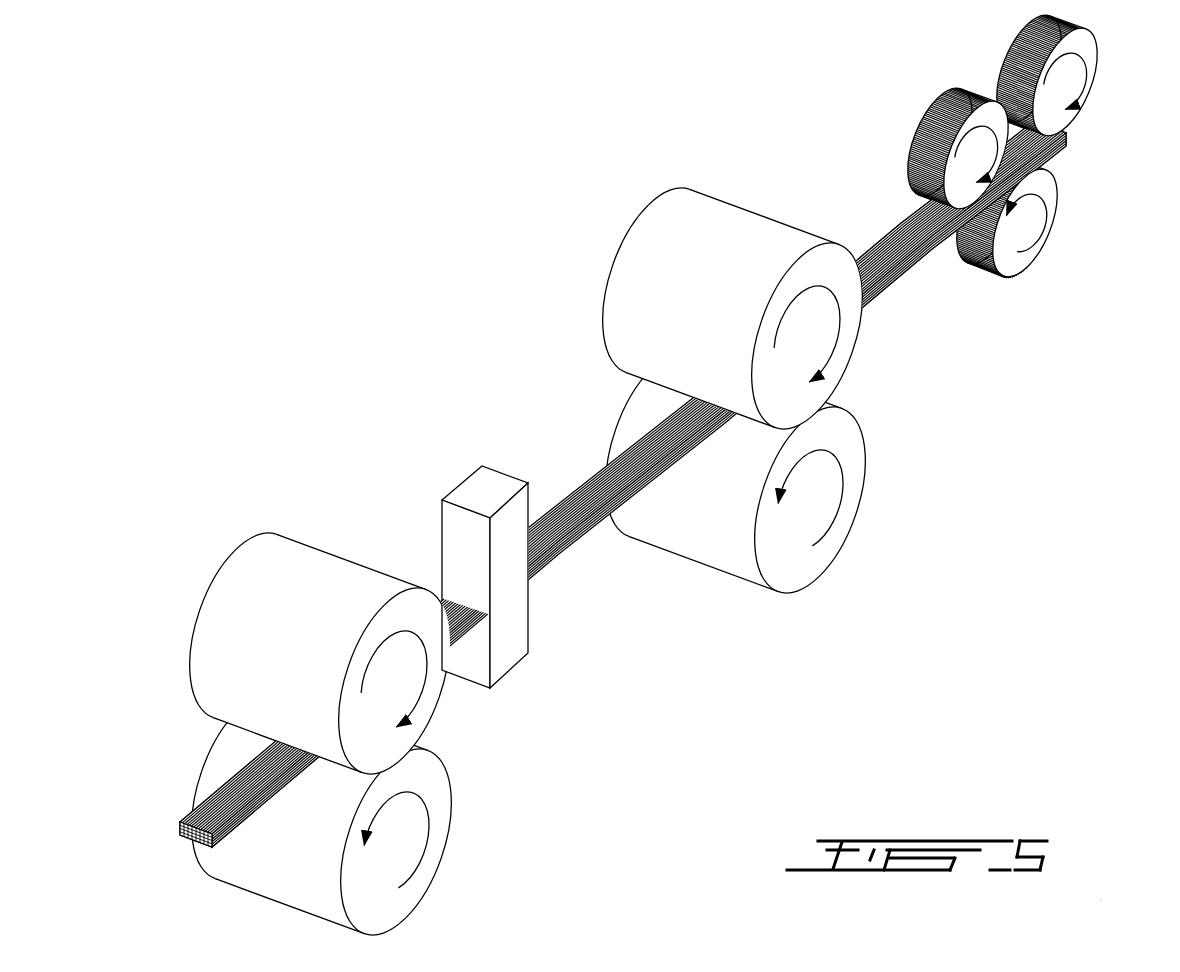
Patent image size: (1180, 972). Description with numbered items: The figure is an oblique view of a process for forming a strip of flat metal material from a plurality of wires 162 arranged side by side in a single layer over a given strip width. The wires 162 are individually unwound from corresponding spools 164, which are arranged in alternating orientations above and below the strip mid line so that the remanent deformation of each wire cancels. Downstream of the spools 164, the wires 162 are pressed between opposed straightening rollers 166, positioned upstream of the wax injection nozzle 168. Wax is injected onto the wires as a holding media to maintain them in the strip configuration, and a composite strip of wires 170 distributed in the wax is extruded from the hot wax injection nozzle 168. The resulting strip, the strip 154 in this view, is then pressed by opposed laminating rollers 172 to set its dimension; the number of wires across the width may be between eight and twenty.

The strip 154 is at (203, 813).
The wires 162 is at (918, 257).
The spools 164 is at (983, 145).
The straightening rollers 166 is at (838, 367).
The wax injection nozzle 168 is at (481, 485).
The composite strip of wires 170 is at (460, 607).
The laminating rollers 172 is at (427, 707).